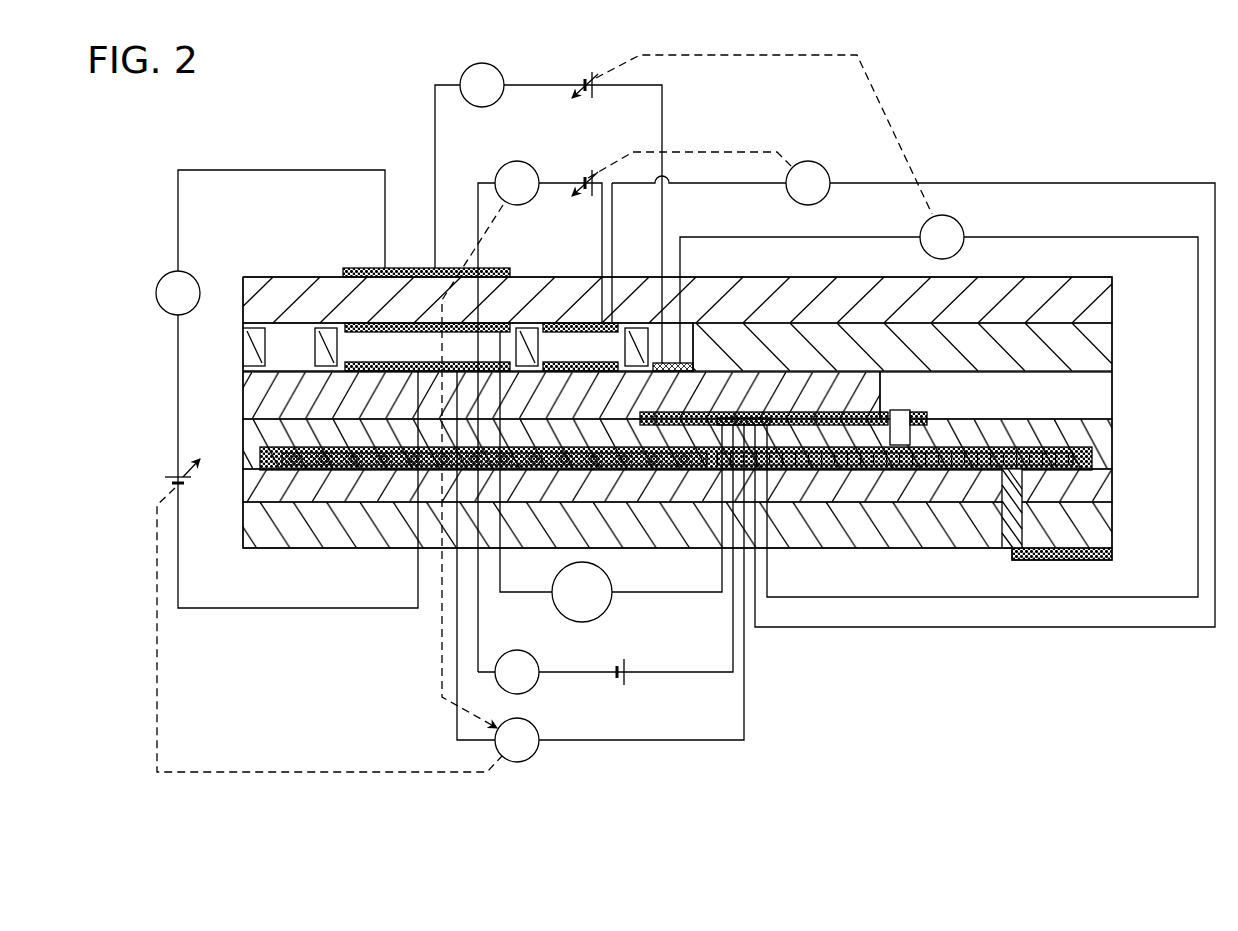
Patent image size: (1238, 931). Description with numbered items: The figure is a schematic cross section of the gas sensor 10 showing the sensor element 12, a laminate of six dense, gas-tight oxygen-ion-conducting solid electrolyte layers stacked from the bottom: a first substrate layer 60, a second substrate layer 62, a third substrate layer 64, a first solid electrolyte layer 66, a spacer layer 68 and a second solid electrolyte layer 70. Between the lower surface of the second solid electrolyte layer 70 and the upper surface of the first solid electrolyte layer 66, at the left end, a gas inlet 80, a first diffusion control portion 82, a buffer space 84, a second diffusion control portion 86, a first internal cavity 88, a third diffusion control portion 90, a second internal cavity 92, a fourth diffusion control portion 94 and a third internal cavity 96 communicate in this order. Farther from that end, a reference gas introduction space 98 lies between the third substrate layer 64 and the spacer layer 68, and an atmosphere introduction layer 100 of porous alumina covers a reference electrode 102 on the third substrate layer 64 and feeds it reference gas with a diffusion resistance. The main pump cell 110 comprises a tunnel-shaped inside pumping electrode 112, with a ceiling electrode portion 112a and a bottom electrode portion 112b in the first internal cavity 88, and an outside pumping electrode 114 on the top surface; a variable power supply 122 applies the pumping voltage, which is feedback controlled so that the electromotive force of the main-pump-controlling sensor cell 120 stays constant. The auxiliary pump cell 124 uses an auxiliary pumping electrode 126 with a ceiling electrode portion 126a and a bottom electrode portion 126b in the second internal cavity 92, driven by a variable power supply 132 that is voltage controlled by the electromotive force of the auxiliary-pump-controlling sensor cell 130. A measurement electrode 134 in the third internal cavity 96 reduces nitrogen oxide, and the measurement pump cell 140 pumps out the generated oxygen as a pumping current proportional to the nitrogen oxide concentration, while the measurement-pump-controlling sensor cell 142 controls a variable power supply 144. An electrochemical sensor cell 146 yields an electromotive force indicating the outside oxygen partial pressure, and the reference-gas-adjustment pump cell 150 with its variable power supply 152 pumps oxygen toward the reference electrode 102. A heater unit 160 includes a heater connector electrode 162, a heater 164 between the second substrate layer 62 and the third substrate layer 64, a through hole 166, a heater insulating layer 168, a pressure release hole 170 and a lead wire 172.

The gas sensor 10 is at (655, 410).
The sensor element 12 is at (689, 392).
The first substrate layer 60 is at (1098, 528).
The second substrate layer 62 is at (1098, 488).
The third substrate layer 64 is at (253, 441).
The first solid electrolyte layer 66 is at (253, 398).
The spacer layer 68 is at (1097, 350).
The second solid electrolyte layer 70 is at (1097, 305).
The gas inlet 80 is at (243, 367).
The first diffusion control portion 82 is at (254, 329).
The buffer space 84 is at (290, 340).
The second diffusion control portion 86 is at (326, 340).
The first internal cavity 88 is at (462, 342).
The third diffusion control portion 90 is at (527, 327).
The second internal cavity 92 is at (558, 340).
The fourth diffusion control portion 94 is at (657, 333).
The third internal cavity 96 is at (687, 345).
The reference gas introduction space 98 is at (1098, 397).
The atmosphere introduction layer 100 is at (873, 412).
The reference electrode 102 is at (757, 411).
The main pump cell 110 is at (256, 363).
The inside pumping electrode 112 is at (405, 316).
The ceiling electrode portion 112a is at (427, 333).
The bottom electrode portion 112b is at (373, 373).
The outside pumping electrode 114 is at (370, 268).
The main-pump-controlling oxygen-partial-pressure-detecting sensor cell 120 is at (548, 759).
The variable power supply 122 is at (163, 480).
The auxiliary pump cell 124 is at (539, 392).
The auxiliary pumping electrode 126 is at (585, 310).
The ceiling electrode portion 126a is at (578, 323).
The bottom electrode portion 126b is at (586, 373).
The auxiliary-pump-controlling oxygen-partial-pressure-detecting sensor cell 130 is at (1060, 173).
The variable power supply 132 is at (588, 175).
The measurement electrode 134 is at (667, 372).
The measurement pump cell 140 is at (520, 194).
The measurement-pump-controlling oxygen-partial-pressure-detecting sensor cell 142 is at (1059, 232).
The variable power supply 144 is at (590, 76).
The electrochemical sensor cell 146 is at (531, 600).
The reference-gas-adjustment pump cell 150 is at (605, 580).
The variable power supply 152 is at (615, 684).
The heater unit 160 is at (720, 508).
The heater connector electrode 162 is at (1105, 553).
The heater 164 is at (350, 466).
The through hole 166 is at (1007, 518).
The heater insulating layer 168 is at (266, 471).
The pressure release hole 170 is at (907, 437).
The lead wire 172 is at (817, 460).